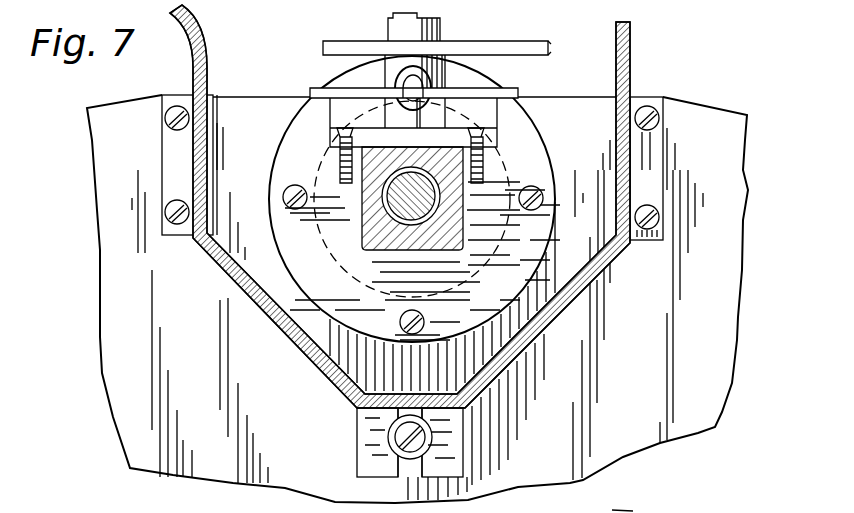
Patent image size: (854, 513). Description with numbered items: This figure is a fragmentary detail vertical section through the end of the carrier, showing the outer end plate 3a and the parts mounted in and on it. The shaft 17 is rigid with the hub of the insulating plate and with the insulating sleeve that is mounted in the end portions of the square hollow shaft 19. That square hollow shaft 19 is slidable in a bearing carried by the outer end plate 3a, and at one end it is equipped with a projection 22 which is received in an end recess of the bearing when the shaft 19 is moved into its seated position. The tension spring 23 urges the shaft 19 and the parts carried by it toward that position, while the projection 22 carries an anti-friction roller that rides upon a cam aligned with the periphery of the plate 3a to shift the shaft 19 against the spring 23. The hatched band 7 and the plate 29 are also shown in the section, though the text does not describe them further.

The outer end plate 3a is at (417, 297).
The resilient band strip 7 is at (645, 62).
The shaft 17 is at (396, 207).
The square hollow shaft 19 is at (471, 165).
The projection 22 is at (447, 84).
The tension spring 23 is at (402, 78).
The top plate 29 is at (548, 44).